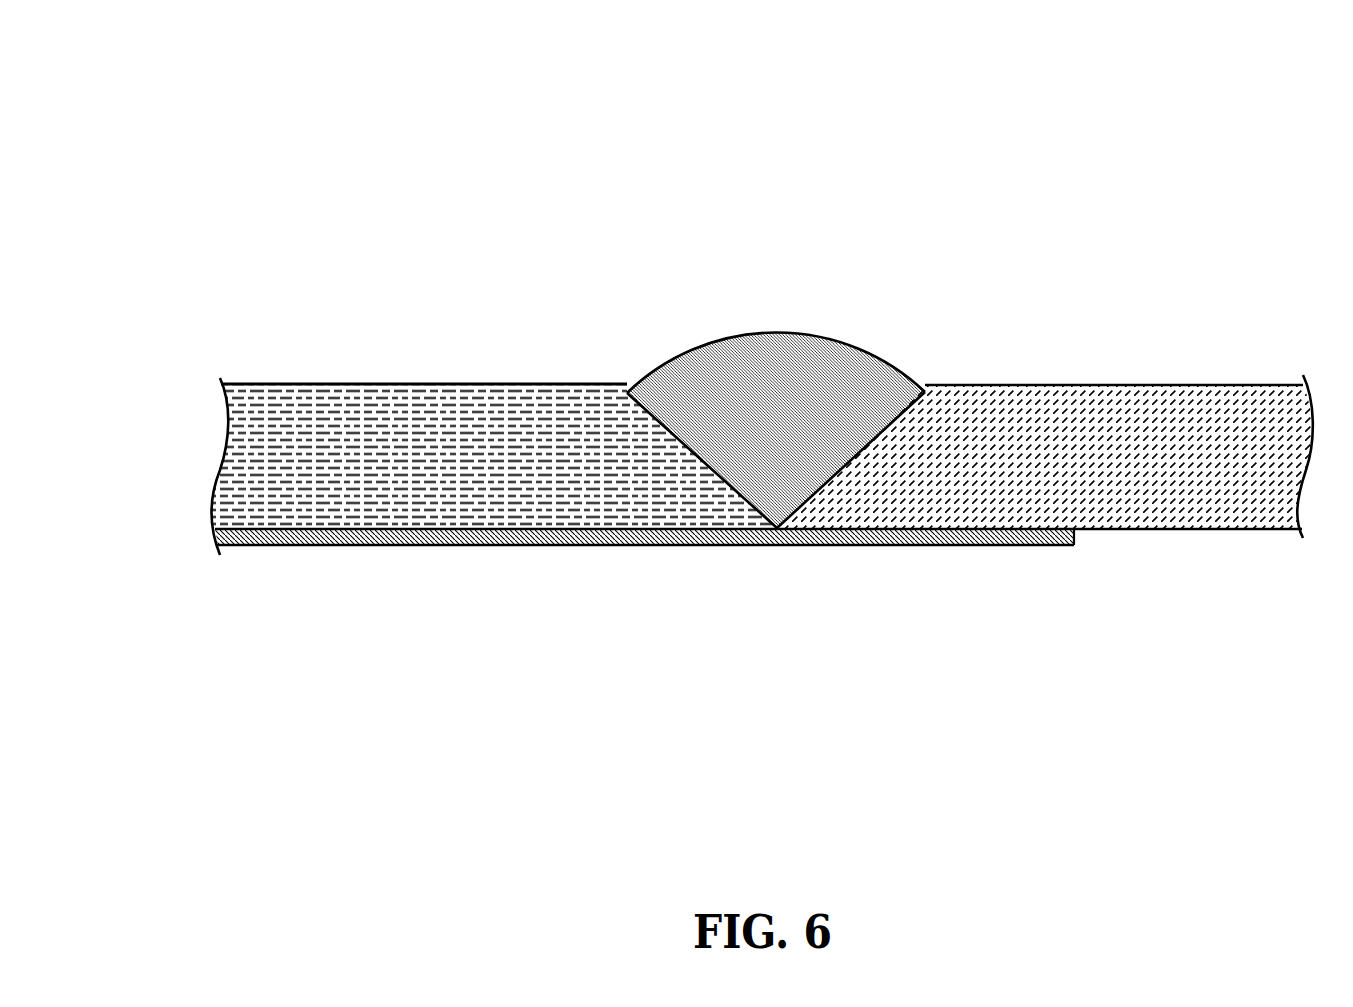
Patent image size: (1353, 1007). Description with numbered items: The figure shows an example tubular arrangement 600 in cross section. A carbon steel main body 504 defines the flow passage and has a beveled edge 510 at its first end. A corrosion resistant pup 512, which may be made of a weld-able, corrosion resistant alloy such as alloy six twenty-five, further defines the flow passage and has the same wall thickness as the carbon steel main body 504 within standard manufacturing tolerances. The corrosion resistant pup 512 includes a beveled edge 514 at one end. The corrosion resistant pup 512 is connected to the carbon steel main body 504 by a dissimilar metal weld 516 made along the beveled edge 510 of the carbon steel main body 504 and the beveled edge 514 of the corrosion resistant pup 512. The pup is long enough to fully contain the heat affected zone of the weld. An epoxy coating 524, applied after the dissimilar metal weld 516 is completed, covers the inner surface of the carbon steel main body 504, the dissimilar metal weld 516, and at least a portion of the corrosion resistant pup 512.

The tubular arrangement 600 is at (184, 124).
The carbon steel main body 504 is at (369, 385).
The corrosion resistant pup 512 is at (1168, 386).
The epoxy coating 524 is at (463, 546).
The dissimilar metal weld 516 is at (783, 336).
The beveled edge 510 is at (703, 460).
The beveled edge 514 is at (853, 462).